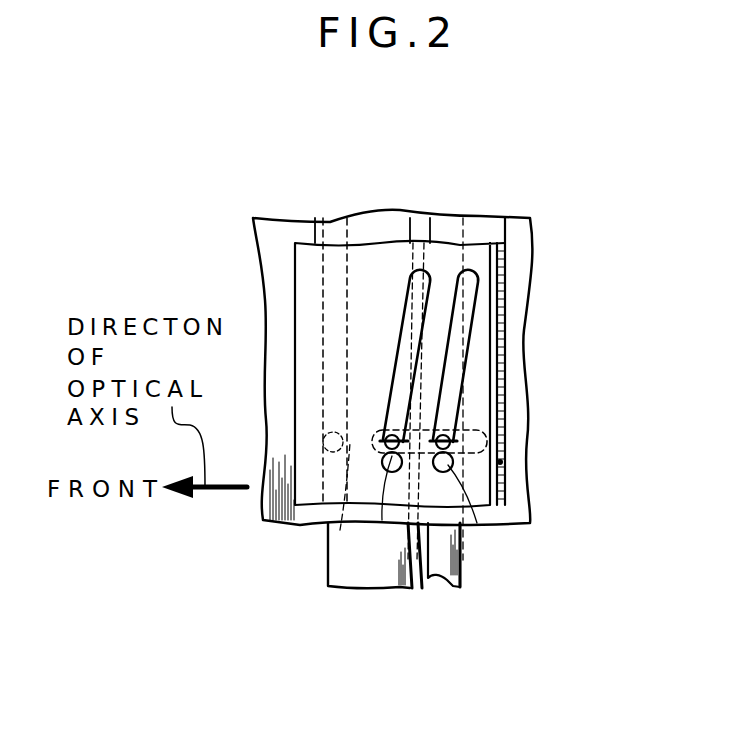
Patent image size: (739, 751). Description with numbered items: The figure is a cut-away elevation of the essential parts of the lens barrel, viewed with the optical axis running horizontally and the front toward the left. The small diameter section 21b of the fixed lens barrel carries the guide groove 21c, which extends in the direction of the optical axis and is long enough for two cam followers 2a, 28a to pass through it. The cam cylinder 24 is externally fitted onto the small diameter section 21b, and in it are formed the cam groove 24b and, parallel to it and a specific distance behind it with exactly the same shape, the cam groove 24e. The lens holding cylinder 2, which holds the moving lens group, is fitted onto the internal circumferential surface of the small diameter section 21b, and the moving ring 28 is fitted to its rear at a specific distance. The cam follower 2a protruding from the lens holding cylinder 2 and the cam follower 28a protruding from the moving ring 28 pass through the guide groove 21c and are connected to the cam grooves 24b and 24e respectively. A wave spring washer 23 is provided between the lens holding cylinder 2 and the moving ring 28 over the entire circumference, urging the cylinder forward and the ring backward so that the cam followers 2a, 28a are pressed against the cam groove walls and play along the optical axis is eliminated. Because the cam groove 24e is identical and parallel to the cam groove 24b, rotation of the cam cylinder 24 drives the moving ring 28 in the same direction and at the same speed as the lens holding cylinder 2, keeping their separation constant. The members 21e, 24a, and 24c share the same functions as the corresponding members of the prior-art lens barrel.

The lens holding cylinder 2 is at (362, 582).
The cam follower 2a is at (382, 520).
The small diameter section 21b is at (280, 525).
The guide groove 21c is at (500, 463).
The member of the fixed lens barrel 21e is at (340, 530).
The wave spring washer 23 is at (425, 572).
The cam cylinder 24 is at (300, 243).
The member of the cam cylinder 24a is at (347, 218).
The cam groove 24b is at (405, 311).
The member of the cam cylinder 24c is at (505, 410).
The cam groove 24e is at (453, 312).
The moving ring 28 is at (447, 576).
The cam follower 28a is at (477, 523).